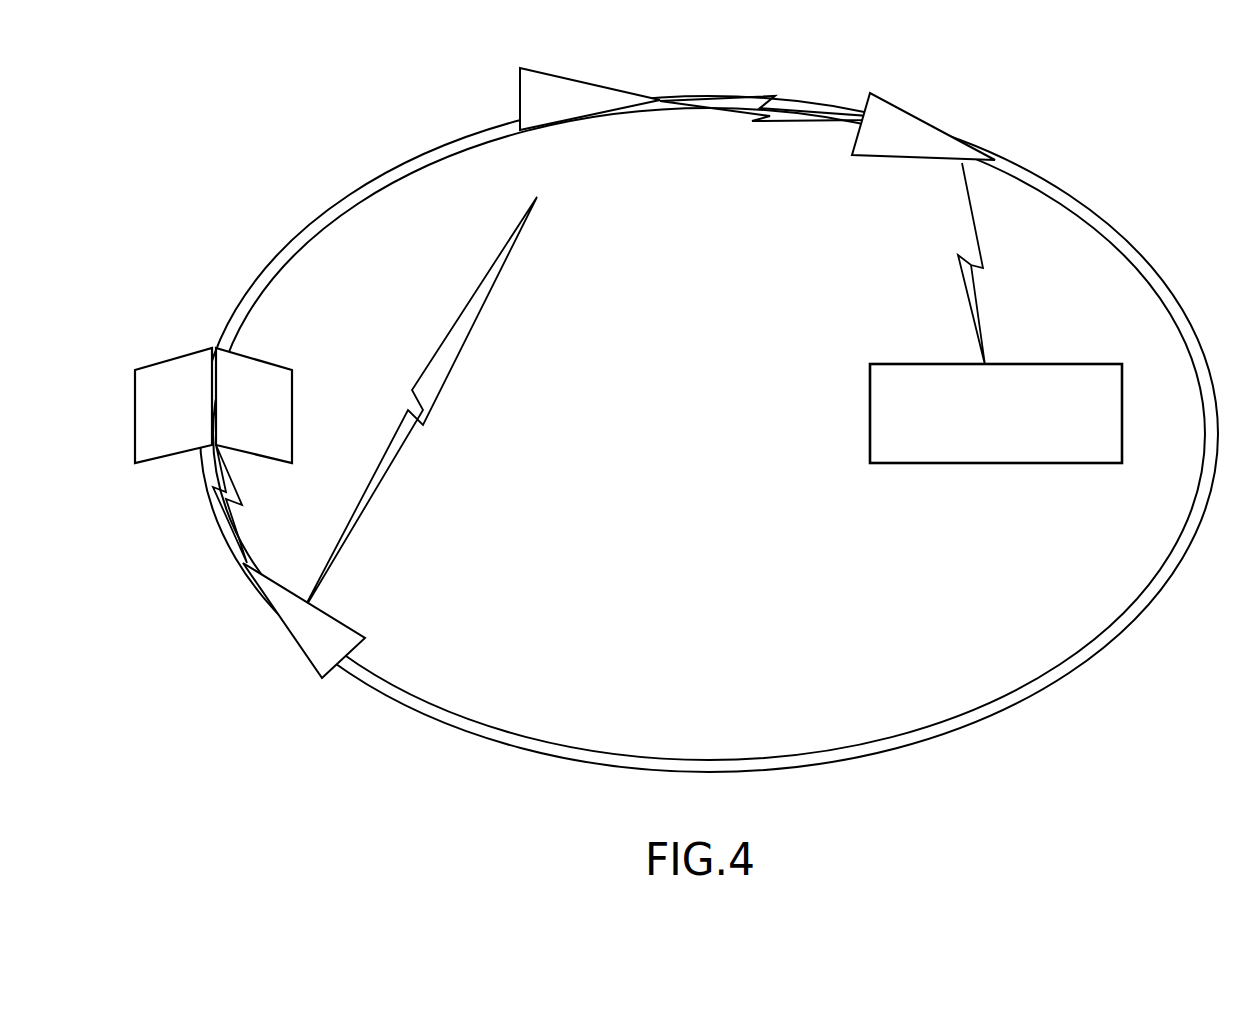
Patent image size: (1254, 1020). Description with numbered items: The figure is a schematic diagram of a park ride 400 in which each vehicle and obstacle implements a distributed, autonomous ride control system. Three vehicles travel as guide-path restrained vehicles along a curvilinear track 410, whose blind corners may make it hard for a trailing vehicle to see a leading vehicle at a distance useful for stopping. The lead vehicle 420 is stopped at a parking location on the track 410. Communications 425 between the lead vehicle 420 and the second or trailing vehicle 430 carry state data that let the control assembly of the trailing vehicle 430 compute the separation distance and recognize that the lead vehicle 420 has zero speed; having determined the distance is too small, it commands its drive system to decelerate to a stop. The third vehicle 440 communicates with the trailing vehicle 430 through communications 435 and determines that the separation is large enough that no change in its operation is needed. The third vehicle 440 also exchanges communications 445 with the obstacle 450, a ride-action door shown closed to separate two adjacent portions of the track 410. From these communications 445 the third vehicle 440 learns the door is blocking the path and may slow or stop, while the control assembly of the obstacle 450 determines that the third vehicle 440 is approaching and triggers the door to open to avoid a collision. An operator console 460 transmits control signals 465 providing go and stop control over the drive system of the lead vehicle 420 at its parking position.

The park ride 400 is at (262, 171).
The track 410 is at (590, 740).
The lead vehicle 420 is at (930, 124).
The communications between vehicles 420 and 430 425 is at (777, 101).
The second or trailing vehicle 430 is at (580, 81).
The communications between vehicles 440 and 430 435 is at (388, 457).
The third vehicle 440 is at (285, 630).
The communications between vehicle 440 and obstacle 450 445 is at (247, 500).
The obstacle 450 is at (293, 423).
The operator console 460 is at (868, 418).
The control signals/communications 465 is at (980, 305).